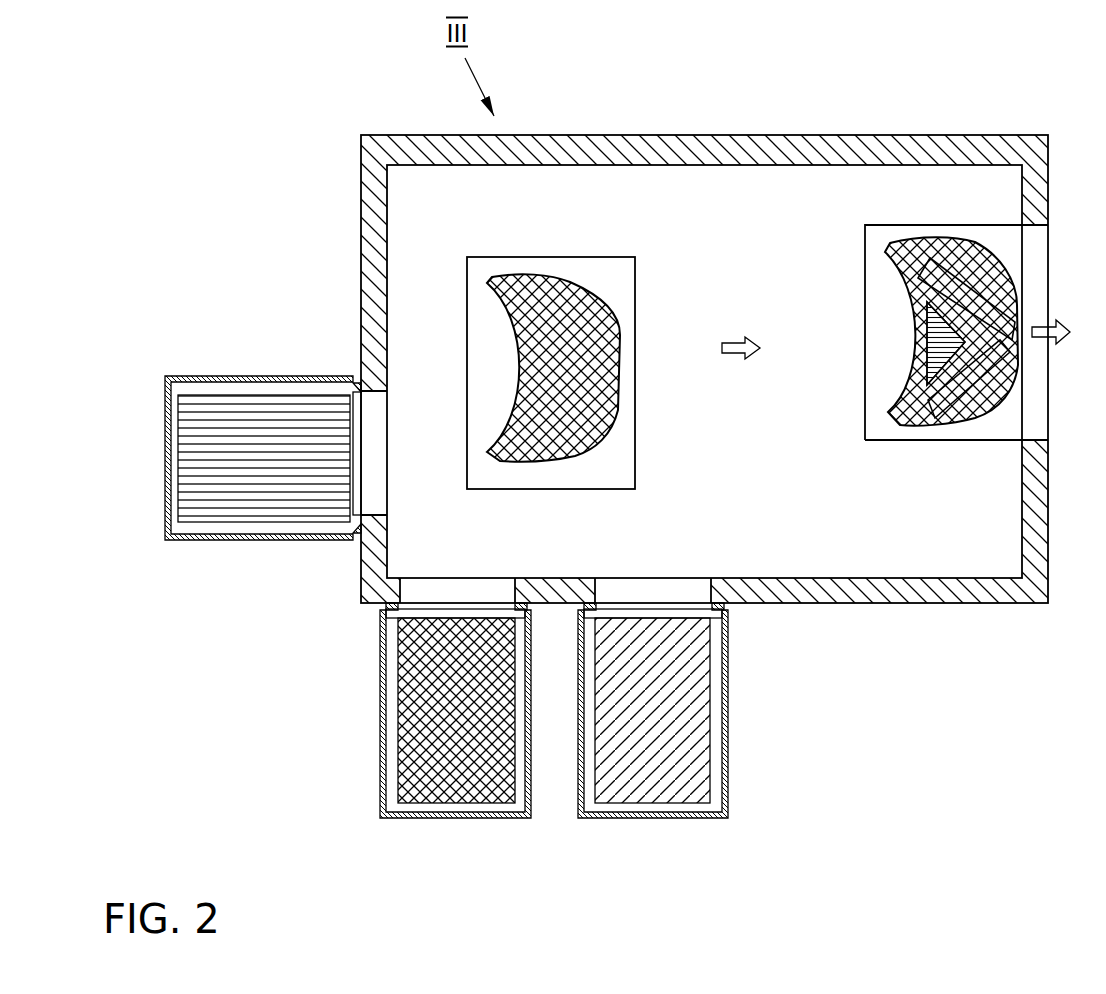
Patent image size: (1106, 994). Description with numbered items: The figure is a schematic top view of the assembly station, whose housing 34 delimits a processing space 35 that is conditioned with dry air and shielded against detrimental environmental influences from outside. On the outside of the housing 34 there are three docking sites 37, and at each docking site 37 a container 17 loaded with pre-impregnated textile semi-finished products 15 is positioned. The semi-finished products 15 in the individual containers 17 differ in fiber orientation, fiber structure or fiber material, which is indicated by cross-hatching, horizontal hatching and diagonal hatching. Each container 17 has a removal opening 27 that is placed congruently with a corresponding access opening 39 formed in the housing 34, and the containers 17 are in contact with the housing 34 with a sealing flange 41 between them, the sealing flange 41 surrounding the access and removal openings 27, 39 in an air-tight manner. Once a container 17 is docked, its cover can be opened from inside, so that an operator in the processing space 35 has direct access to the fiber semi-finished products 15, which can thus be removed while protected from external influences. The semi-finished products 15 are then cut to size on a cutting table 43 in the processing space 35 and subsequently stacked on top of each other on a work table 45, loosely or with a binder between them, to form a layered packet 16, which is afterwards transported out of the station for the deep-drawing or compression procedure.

The pre-impregnated textile semi-finished product 15 is at (228, 420).
The layered packet 16 is at (955, 422).
The container 17 is at (253, 540).
The removal opening 27 is at (352, 448).
The housing 34 is at (410, 137).
The processing space 35 is at (720, 279).
The docking site 37 is at (298, 349).
The access opening 39 is at (388, 398).
The sealing flange 41 is at (358, 383).
The cutting table 43 is at (541, 257).
The work table 45 is at (935, 352).